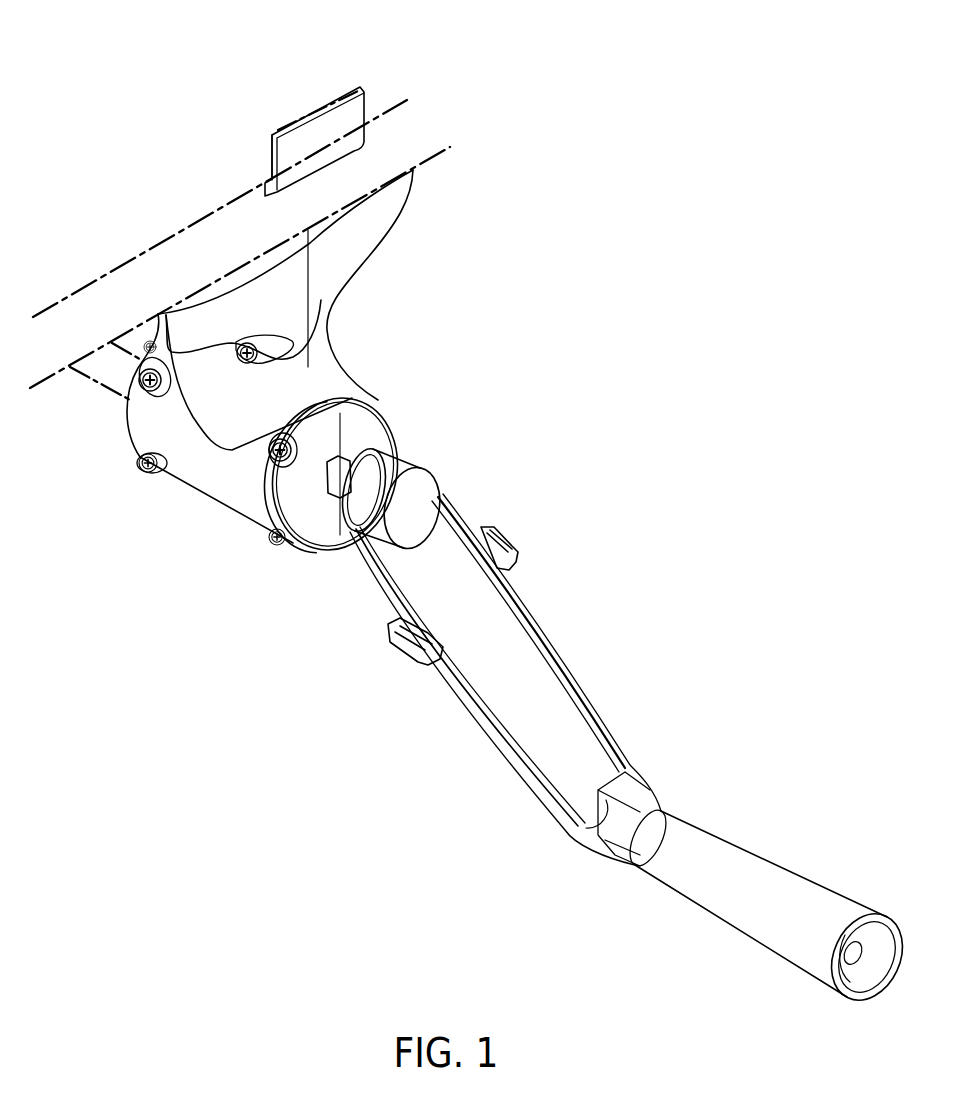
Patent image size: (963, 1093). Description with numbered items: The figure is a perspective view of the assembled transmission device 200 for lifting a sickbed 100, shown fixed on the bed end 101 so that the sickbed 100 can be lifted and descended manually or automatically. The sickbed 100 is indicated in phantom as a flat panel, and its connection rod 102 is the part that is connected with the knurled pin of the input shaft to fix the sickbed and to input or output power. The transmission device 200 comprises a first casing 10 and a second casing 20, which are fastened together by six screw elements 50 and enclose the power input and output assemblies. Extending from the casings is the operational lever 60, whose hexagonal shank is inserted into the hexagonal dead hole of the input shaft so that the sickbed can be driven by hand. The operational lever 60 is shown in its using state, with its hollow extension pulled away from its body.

The sickbed 100 is at (208, 195).
The bed end 101 is at (117, 287).
The connection rod 102 is at (113, 377).
The first casing 10 is at (389, 401).
The second casing 20 is at (193, 477).
The screw elements 50 is at (272, 462).
The operational lever 60 is at (540, 607).
The transmission device 200 is at (348, 678).